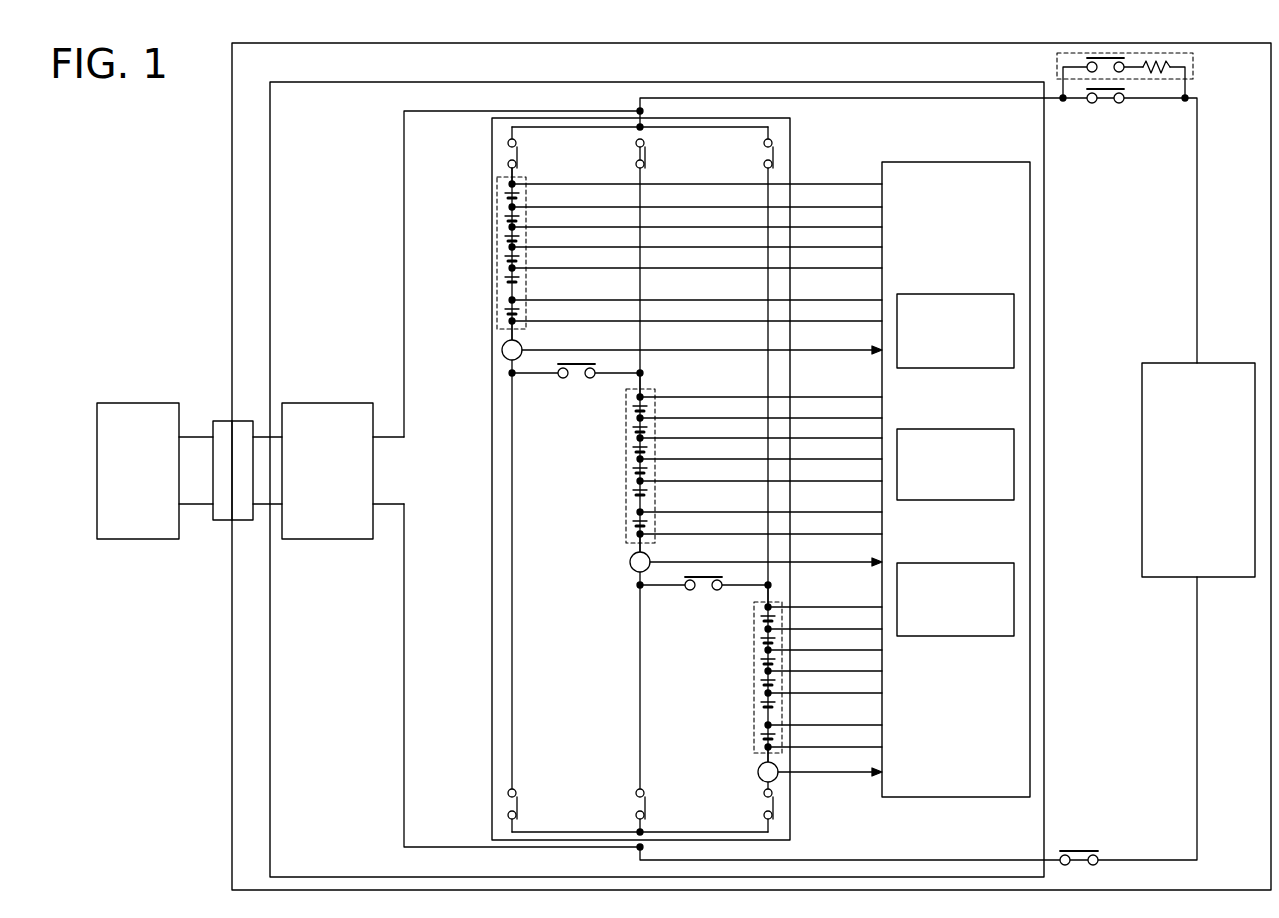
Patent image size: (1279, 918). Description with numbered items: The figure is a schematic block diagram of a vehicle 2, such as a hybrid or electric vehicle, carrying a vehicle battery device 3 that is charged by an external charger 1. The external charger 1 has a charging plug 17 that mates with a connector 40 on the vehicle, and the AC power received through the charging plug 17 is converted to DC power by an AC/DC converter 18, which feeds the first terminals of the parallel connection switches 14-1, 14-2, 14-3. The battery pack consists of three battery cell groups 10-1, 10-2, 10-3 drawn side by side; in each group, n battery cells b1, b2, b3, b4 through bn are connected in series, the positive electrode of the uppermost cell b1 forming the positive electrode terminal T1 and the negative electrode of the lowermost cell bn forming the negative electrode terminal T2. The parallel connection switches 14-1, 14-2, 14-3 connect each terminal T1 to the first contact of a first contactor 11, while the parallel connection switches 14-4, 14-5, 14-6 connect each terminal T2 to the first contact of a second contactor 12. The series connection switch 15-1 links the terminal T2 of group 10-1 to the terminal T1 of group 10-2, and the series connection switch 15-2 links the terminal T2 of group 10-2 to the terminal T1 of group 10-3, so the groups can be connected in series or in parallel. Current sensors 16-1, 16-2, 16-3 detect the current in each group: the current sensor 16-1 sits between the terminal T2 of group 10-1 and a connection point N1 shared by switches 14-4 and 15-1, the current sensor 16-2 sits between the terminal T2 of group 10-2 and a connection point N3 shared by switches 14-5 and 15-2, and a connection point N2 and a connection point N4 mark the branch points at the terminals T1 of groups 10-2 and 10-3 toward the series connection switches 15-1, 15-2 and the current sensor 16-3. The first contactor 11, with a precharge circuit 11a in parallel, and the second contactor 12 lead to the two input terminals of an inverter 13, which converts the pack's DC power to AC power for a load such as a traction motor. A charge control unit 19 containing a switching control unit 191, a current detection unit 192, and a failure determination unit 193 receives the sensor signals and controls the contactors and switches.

The external charger 1 is at (146, 401).
The vehicle 2 is at (232, 176).
The vehicle battery device 3 is at (270, 233).
The battery cell group 10-1 is at (497, 292).
The battery cell group 10-2 is at (626, 504).
The battery cell group 10-3 is at (754, 713).
The first contactor 11 is at (1108, 105).
The precharge circuit 11a is at (1193, 66).
The second contactor 12 is at (1082, 850).
The inverter 13 is at (1210, 362).
The parallel connection switch 14-1 is at (520, 155).
The parallel connection switch 14-2 is at (648, 155).
The parallel connection switch 14-3 is at (776, 155).
The parallel connection switch 14-4 is at (520, 806).
The parallel connection switch 14-5 is at (648, 806).
The parallel connection switch 14-6 is at (776, 806).
The series connection switch 15-1 is at (576, 378).
The series connection switch 15-2 is at (703, 590).
The current sensor 16-1 is at (502, 356).
The current sensor 16-2 is at (630, 566).
The current sensor 16-3 is at (758, 777).
The charging plug 17 is at (222, 420).
The AC/DC converter 18 is at (331, 401).
The charge control unit 19 is at (987, 479).
The switching control unit 191 is at (950, 294).
The current detection unit 192 is at (950, 429).
The failure determination unit 193 is at (950, 563).
The connector 40 is at (243, 420).
The positive electrode terminal T1 is at (508, 169).
The negative electrode terminal T2 is at (508, 341).
The battery cell b1 is at (508, 184).
The battery cell b2 is at (508, 207).
The battery cell b3 is at (508, 230).
The battery cell b4 is at (508, 252).
The battery cell bn is at (508, 306).
The connection point N1 is at (510, 375).
The connection point N2 is at (644, 373).
The connection point N3 is at (636, 590).
The connection point N4 is at (772, 585).